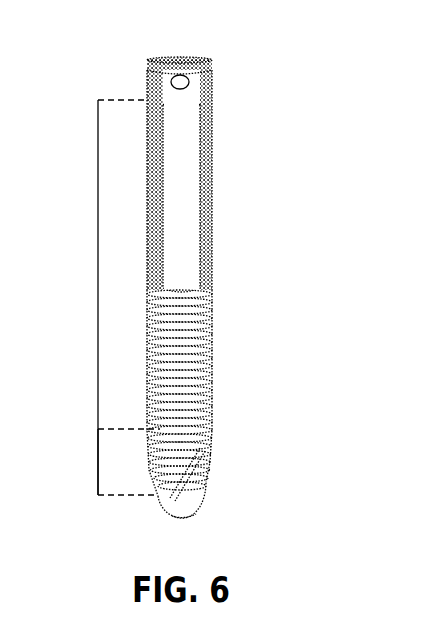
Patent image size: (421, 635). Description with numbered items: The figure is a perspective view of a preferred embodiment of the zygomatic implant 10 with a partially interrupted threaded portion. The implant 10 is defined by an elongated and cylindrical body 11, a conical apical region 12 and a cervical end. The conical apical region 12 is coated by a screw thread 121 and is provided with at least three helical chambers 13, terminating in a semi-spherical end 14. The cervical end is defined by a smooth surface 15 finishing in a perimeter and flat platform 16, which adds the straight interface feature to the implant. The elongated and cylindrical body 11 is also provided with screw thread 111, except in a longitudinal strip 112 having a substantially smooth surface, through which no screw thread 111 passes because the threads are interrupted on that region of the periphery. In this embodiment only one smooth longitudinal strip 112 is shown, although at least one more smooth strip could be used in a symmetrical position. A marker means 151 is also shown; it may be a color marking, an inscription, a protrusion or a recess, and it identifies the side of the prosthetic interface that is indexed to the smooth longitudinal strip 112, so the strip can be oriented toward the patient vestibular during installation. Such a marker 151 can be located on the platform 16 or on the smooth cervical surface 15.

The zygomatic implant 10 is at (258, 102).
The elongated and cylindrical body 11 is at (98, 266).
The conical apical region 12 is at (98, 462).
The helical chambers 13 is at (191, 461).
The semi-spherical end 14 is at (173, 503).
The smooth surface 15 is at (160, 82).
The flat platform 16 is at (208, 62).
The marker means 151 is at (177, 76).
The screw thread 111 is at (209, 326).
The longitudinal strip 112 is at (179, 196).
The screw thread 121 is at (206, 480).